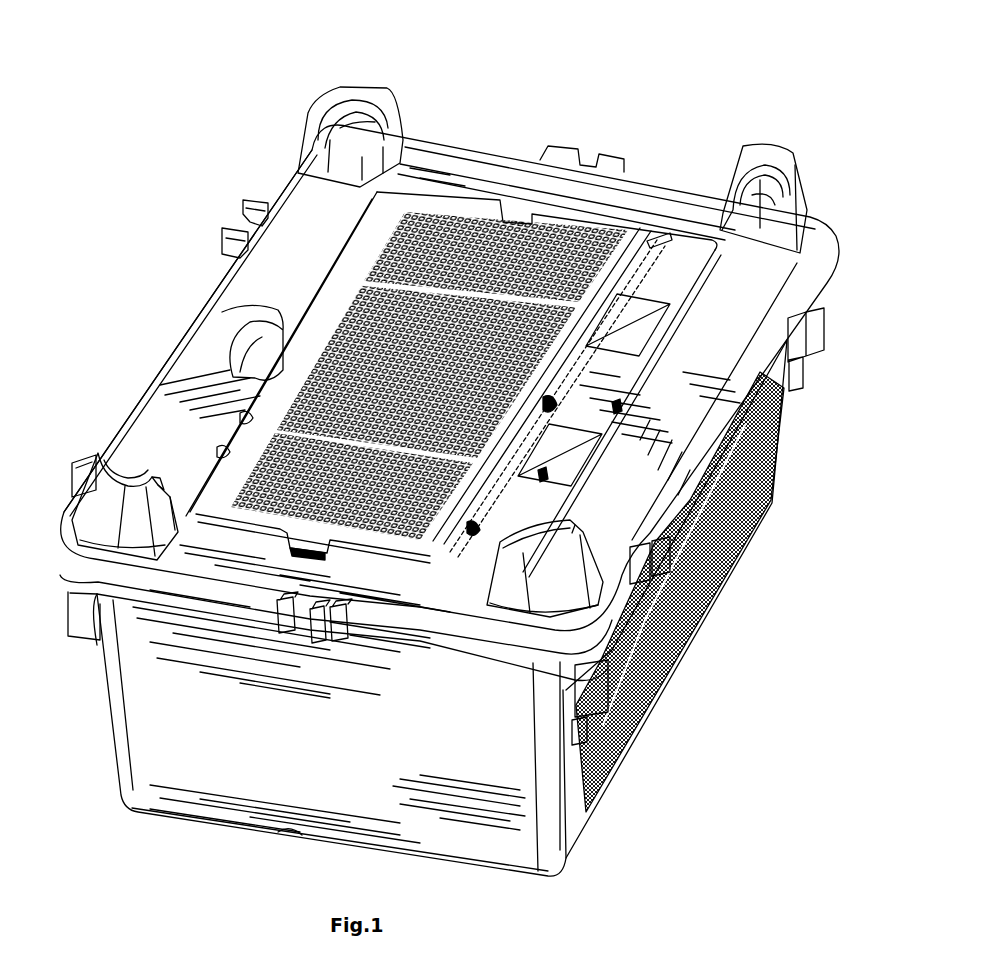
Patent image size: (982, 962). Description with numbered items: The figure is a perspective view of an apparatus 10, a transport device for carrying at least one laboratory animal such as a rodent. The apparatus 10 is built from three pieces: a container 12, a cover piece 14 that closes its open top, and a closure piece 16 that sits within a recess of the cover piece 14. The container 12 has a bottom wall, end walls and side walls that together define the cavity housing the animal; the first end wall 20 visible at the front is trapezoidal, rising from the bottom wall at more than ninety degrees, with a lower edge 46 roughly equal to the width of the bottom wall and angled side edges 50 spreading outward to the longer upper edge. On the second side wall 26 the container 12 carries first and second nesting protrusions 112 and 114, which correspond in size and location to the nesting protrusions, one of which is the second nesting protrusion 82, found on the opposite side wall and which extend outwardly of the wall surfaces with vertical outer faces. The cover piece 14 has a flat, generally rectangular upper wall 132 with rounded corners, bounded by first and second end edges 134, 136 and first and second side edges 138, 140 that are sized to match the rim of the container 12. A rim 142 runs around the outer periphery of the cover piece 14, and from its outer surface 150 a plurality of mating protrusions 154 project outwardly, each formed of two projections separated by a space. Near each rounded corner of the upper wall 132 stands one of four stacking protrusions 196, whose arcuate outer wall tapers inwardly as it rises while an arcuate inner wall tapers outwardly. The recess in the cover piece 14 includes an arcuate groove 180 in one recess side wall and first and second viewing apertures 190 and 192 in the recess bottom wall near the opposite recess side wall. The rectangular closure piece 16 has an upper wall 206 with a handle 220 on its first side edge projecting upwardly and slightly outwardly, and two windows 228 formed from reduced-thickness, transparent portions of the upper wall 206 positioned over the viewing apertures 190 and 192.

The apparatus 10 is at (165, 130).
The container 12 is at (222, 785).
The cover piece 14 is at (298, 218).
The closure piece 16 is at (675, 268).
The first end wall 20 is at (430, 770).
The second side wall 26 is at (573, 795).
The lower edge 46 is at (288, 832).
The angled side edges 50 is at (128, 710).
The second nesting protrusion 82 is at (80, 608).
The first nesting protrusion 112 is at (628, 720).
The second nesting protrusion 114 is at (808, 368).
The upper wall 132 is at (215, 327).
The first end edge 134 is at (458, 628).
The second end edge 136 is at (722, 222).
The first side edge 138 is at (165, 360).
The second side edge 140 is at (798, 222).
The rim 142 is at (178, 596).
The outer surface 150 is at (773, 392).
The mating protrusions 154 is at (580, 152).
The arcuate groove 180 is at (245, 355).
The first viewing aperture 190 is at (562, 458).
The second viewing aperture 192 is at (622, 350).
The stacking protrusions 196 is at (347, 82).
The upper wall 206 is at (656, 282).
The handle 220 is at (212, 310).
The windows 228 is at (623, 410).